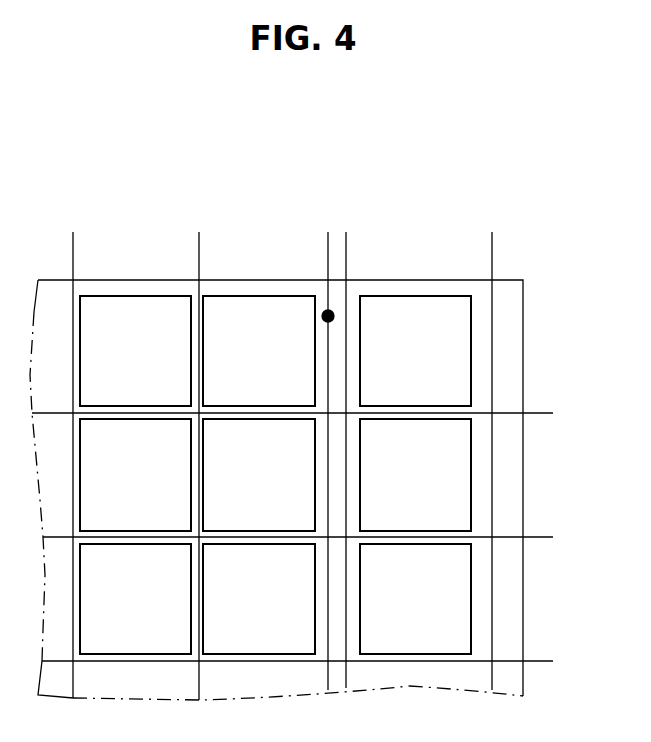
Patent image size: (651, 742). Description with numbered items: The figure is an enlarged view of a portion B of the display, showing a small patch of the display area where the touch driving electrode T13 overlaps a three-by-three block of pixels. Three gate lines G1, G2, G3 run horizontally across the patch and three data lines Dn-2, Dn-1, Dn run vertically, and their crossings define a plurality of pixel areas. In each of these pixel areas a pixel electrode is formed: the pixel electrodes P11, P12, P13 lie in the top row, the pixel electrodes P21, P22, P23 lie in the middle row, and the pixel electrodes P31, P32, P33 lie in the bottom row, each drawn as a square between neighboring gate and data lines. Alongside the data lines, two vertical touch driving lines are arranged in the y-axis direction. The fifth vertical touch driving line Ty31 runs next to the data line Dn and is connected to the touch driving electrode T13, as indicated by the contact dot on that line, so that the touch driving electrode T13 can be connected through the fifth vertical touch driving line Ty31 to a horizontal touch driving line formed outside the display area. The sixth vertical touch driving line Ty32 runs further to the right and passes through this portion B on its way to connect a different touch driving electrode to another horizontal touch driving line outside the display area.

The portion B is at (73, 148).
The data line Dn-2 is at (71, 450).
The data line Dn-1 is at (196, 451).
The data line Dn is at (345, 445).
The touch driving electrode T13 is at (418, 280).
The fifth vertical touch driving line Ty31 is at (328, 240).
The sixth vertical touch driving line Ty32 is at (492, 266).
The gate line G1 is at (309, 412).
The gate line G2 is at (315, 537).
The gate line G3 is at (314, 661).
The pixel electrode P11 is at (135, 351).
The pixel electrode P12 is at (259, 351).
The pixel electrode P13 is at (415, 351).
The pixel electrode P21 is at (135, 475).
The pixel electrode P22 is at (259, 475).
The pixel electrode P23 is at (415, 475).
The pixel electrode P31 is at (135, 599).
The pixel electrode P32 is at (259, 599).
The pixel electrode P33 is at (415, 599).